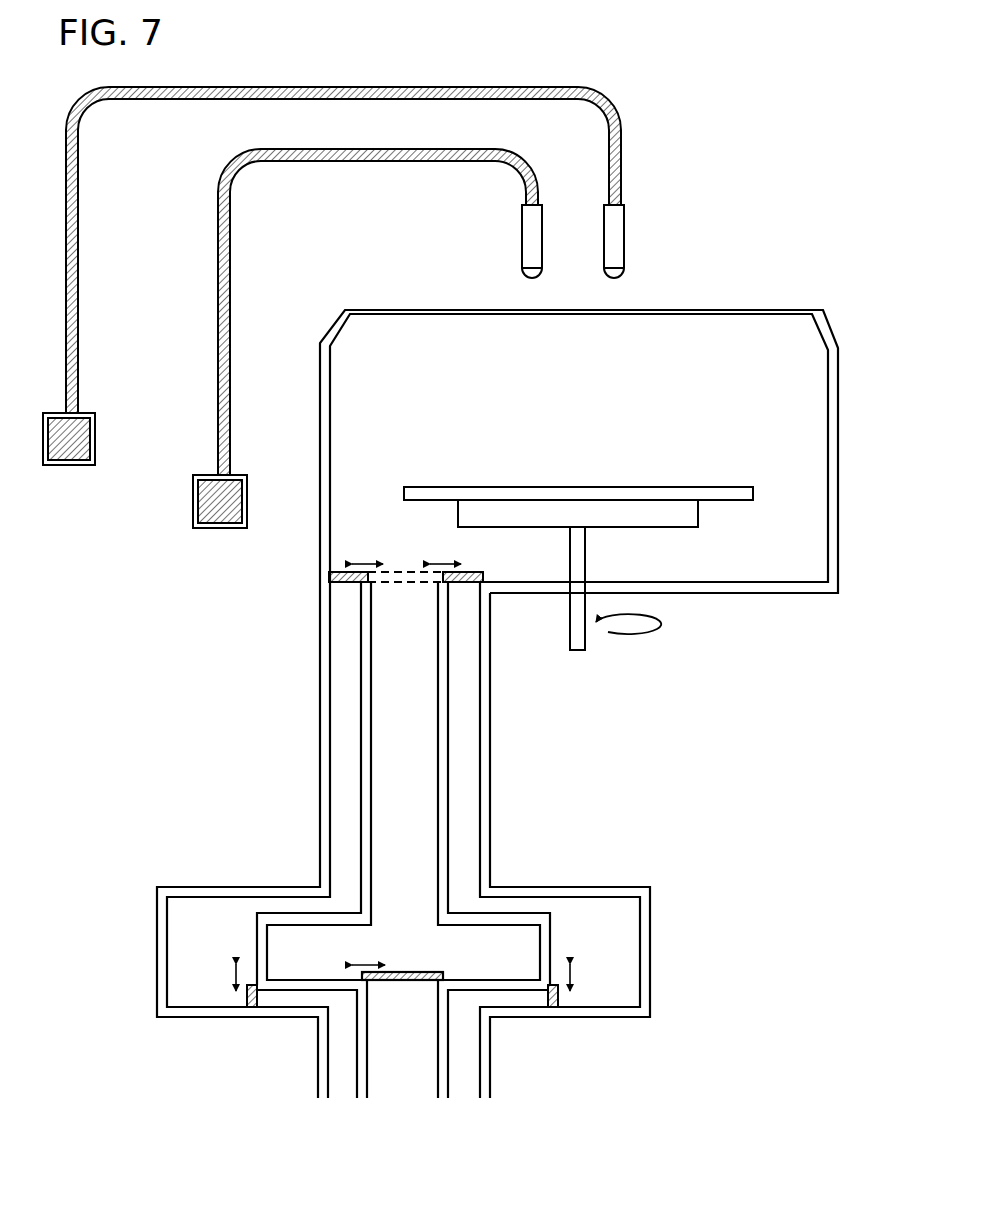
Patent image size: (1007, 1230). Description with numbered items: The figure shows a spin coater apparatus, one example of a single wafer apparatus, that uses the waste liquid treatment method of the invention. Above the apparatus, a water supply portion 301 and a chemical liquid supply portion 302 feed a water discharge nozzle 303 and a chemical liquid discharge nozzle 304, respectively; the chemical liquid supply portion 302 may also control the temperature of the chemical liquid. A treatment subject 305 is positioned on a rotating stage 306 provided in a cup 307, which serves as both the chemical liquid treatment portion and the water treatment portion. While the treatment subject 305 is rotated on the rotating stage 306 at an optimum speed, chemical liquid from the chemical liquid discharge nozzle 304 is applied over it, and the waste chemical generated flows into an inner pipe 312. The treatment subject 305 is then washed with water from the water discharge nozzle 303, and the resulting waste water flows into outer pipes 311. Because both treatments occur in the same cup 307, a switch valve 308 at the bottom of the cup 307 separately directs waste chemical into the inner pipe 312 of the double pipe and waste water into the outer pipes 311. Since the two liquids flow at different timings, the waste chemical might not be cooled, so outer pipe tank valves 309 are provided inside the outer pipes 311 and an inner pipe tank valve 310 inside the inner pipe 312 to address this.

The water supply portion 301 is at (70, 448).
The chemical liquid supply portion 302 is at (197, 528).
The water discharge nozzle 303 is at (615, 242).
The chemical liquid discharge nozzle 304 is at (533, 238).
The treatment subject 305 is at (597, 492).
The rotating stage 306 is at (642, 512).
The cup 307 is at (838, 385).
The switch valve 308 is at (320, 588).
The outer pipe tank valves 309 is at (250, 1008).
The inner pipe tank valve 310 is at (402, 983).
The outer pipes 311 is at (342, 722).
The inner pipe 312 is at (417, 738).